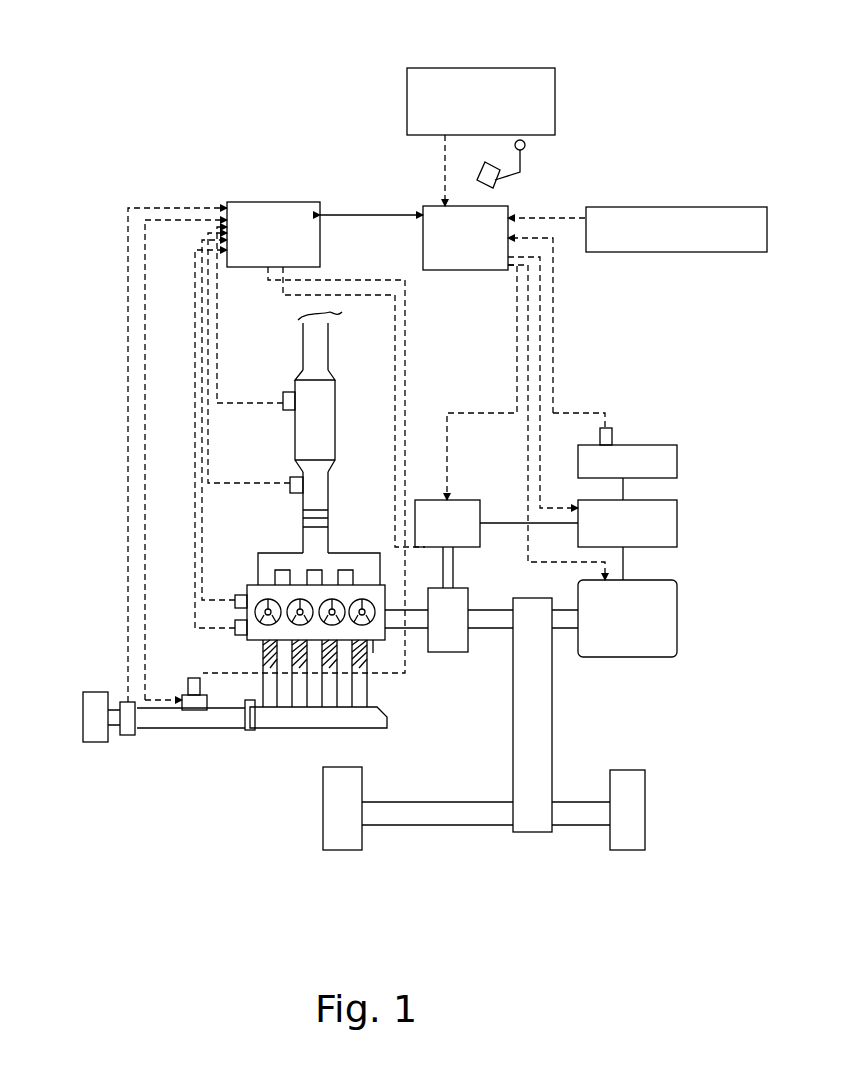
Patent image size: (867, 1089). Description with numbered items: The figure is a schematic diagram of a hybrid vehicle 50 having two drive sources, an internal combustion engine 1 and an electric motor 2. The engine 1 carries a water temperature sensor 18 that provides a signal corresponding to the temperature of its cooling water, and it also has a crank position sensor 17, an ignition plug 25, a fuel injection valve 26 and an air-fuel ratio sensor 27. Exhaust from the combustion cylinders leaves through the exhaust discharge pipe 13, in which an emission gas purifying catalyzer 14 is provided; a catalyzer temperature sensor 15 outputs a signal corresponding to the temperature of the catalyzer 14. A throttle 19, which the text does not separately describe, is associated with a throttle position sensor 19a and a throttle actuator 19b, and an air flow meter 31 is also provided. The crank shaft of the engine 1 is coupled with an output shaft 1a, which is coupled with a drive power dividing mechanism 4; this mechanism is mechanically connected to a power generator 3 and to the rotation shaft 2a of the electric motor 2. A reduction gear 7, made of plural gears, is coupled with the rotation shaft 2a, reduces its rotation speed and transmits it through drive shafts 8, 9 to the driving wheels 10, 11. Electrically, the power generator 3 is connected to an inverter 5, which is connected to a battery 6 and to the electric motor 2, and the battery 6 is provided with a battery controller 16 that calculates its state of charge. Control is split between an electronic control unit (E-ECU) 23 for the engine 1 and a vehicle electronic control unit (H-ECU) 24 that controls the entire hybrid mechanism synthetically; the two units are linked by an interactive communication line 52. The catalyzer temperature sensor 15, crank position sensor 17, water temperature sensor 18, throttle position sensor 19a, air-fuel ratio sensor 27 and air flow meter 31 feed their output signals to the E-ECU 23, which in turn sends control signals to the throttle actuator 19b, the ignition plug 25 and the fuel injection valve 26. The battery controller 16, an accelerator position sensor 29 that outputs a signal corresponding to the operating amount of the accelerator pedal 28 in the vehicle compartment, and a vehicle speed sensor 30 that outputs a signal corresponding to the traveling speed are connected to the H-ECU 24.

The internal combustion engine 1 is at (250, 641).
The output shaft 1a is at (408, 609).
The electric motor 2 is at (677, 620).
The motor rotation shaft 2a is at (490, 630).
The power generator 3 is at (465, 500).
The drive power dividing mechanism 4 is at (468, 590).
The inverter 5 is at (677, 523).
The battery 6 is at (677, 462).
The reduction gear 7 is at (552, 718).
The drive shaft 8 is at (428, 812).
The drive shaft 9 is at (584, 812).
The left drive wheel 10 is at (323, 797).
The right drive wheel 11 is at (630, 770).
The exhaust discharge pipe 13 is at (303, 335).
The emission gas purifying catalyzer 14 is at (335, 420).
The catalyzer temperature sensor 15 is at (283, 400).
The battery controller 16 is at (612, 436).
The crank position sensor 17 is at (239, 594).
The water temperature sensor 18 is at (234, 626).
The exhaust pipe 19 is at (192, 728).
The throttle position sensor 19a is at (188, 680).
The throttle actuator 19b is at (226, 698).
The electronic control unit (E-ECU) 23 is at (272, 202).
The vehicle electronic control unit (H-ECU) 24 is at (508, 207).
The ignition plug 25 is at (378, 585).
The fuel injection valve 26 is at (373, 653).
The air-fuel ratio sensor 27 is at (290, 480).
The accelerator pedal 28 is at (497, 187).
The accelerator position sensor 29 is at (487, 68).
The vehicle speed sensor 30 is at (700, 207).
The air flow meter 31 is at (129, 735).
The hybrid vehicle 50 is at (643, 120).
The communication line 52 is at (360, 214).